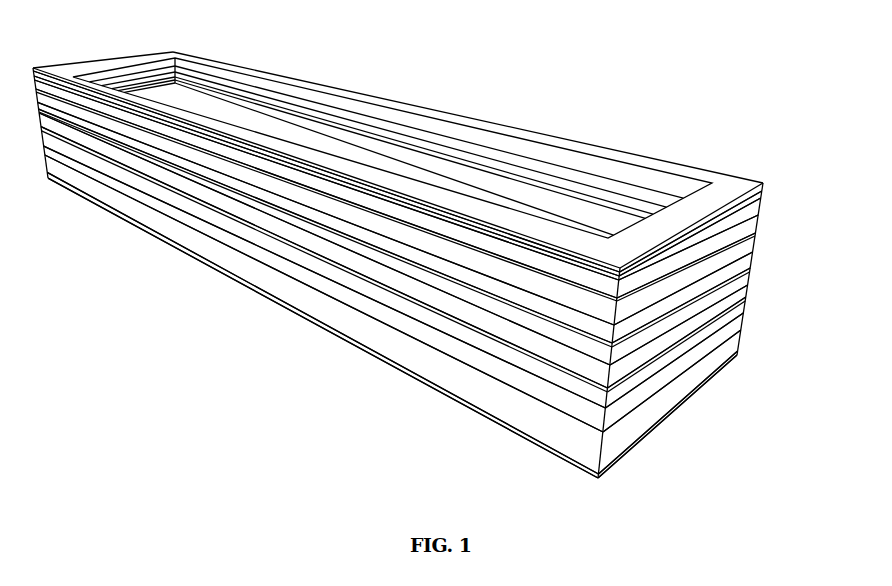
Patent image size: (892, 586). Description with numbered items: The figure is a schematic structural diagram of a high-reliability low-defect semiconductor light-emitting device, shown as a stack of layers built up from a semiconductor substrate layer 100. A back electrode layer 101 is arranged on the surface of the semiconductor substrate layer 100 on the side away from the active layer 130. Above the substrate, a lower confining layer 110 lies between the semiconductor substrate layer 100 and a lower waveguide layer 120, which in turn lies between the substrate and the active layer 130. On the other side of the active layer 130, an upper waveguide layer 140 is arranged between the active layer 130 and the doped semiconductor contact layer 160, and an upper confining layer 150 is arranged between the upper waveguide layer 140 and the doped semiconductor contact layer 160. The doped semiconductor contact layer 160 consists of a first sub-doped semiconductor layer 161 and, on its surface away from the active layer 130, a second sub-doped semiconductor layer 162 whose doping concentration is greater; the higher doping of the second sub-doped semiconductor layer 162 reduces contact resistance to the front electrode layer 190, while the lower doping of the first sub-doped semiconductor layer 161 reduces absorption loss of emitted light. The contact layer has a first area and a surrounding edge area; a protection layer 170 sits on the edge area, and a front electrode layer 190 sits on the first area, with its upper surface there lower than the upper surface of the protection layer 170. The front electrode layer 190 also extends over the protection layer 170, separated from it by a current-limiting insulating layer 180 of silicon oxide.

The semiconductor substrate layer 100 is at (740, 357).
The back electrode layer 101 is at (717, 380).
The lower confining layer 110 is at (738, 323).
The lower waveguide layer 120 is at (740, 310).
The active layer 130 is at (748, 290).
The upper waveguide layer 140 is at (747, 283).
The upper confining layer 150 is at (754, 262).
The doped semiconductor contact layer 160 is at (433, 202).
The first sub-doped semiconductor layer 161 is at (753, 245).
The second sub-doped semiconductor layer 162 is at (757, 220).
The protection layer 170 is at (749, 235).
The current-limiting insulating layer 180 is at (742, 228).
The front electrode layer 190 is at (743, 178).